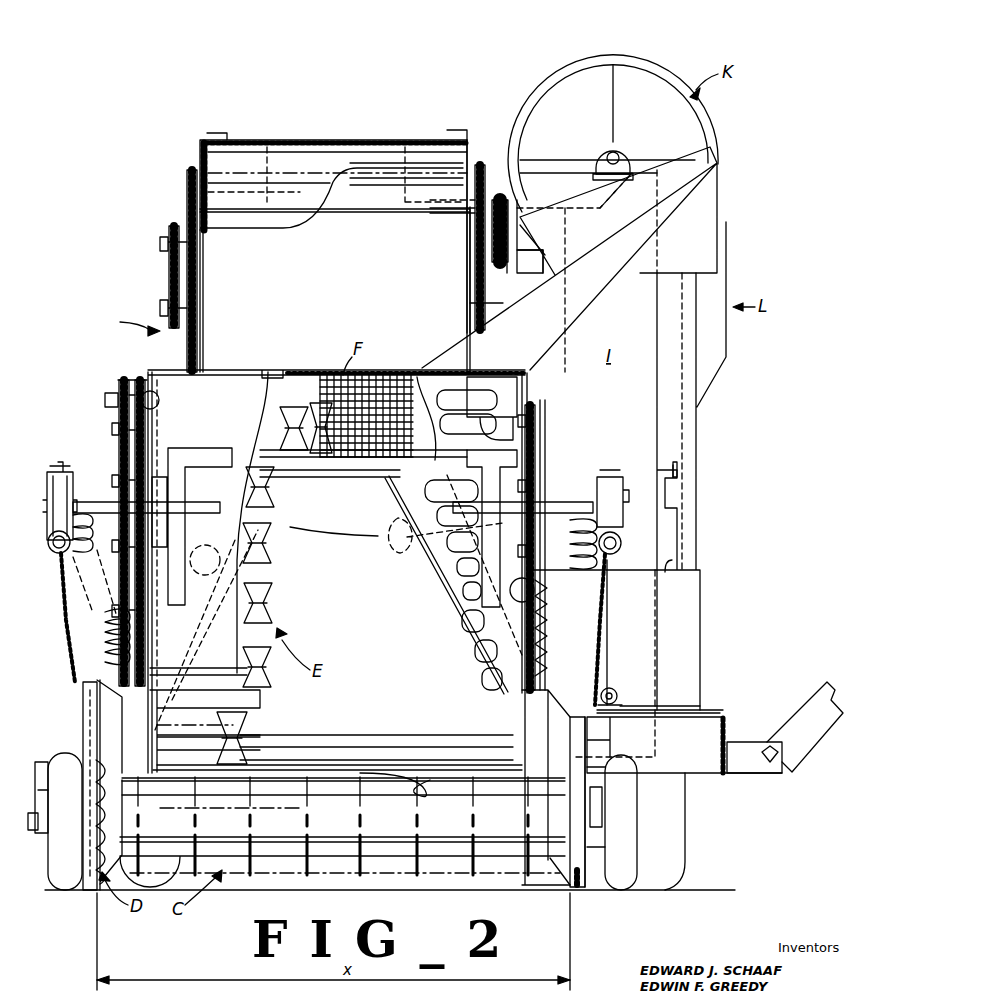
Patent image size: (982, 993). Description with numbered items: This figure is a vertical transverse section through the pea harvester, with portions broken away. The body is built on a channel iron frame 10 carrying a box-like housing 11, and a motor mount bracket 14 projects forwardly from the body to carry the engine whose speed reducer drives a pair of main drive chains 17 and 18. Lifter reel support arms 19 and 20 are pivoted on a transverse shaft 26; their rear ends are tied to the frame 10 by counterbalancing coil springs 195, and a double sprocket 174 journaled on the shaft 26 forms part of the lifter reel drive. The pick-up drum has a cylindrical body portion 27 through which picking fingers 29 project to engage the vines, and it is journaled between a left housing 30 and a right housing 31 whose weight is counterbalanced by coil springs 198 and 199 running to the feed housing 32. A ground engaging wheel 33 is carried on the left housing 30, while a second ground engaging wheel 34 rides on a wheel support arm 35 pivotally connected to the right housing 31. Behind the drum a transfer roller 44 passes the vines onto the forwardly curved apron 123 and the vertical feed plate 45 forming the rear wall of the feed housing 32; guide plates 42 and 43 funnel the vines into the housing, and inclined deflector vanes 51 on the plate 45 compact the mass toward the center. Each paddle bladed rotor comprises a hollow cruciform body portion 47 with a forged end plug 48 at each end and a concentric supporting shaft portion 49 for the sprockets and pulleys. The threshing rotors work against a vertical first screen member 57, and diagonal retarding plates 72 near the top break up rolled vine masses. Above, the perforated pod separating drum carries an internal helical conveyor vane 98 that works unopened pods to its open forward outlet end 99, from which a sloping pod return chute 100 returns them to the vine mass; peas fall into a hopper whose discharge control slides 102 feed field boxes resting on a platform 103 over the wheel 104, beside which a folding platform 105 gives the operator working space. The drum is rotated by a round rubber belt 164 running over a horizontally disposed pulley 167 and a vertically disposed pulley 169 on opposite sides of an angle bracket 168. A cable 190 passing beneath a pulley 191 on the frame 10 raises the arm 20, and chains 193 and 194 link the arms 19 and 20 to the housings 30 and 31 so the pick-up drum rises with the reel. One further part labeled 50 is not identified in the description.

The channel iron frame 10 is at (755, 770).
The box-like housing 11 is at (130, 322).
The motor mount bracket 14 is at (193, 458).
The main drive chain 17 is at (125, 380).
The main drive chain 18 is at (105, 398).
The lifter reel support arm 19 is at (50, 552).
The lifter reel support arm 20 is at (625, 485).
The shaft 26 is at (652, 505).
The cylindrical body portion 27 is at (342, 832).
The picking fingers 29 is at (455, 822).
The housing 30 is at (578, 890).
The housing 31 is at (83, 692).
The feed housing 32 is at (205, 699).
The ground engaging wheel 33 is at (625, 880).
The second ground engaging wheel 34 is at (62, 880).
The wheel support arm 35 is at (40, 790).
The guide plate 42 is at (122, 785).
The guide plate 43 is at (546, 787).
The transfer roller 44 is at (410, 790).
The feed plate 45 is at (337, 571).
The sheet metal body portion 47 is at (345, 420).
The forged metal end plug 48 is at (500, 415).
The supporting shaft portion 49 is at (160, 306).
The cone wall 50 is at (275, 425).
The deflector vanes 51 is at (297, 602).
The first screen member 57 is at (375, 388).
The retarding plates 72 is at (243, 168).
The helical conveyor vane 98 is at (640, 80).
The open forward outlet end 99 is at (712, 120).
The sloping pod return chute 100 is at (569, 358).
The discharge control slides 102 is at (678, 468).
The platform 103 is at (672, 562).
The wheel 104 is at (678, 842).
The folding platform 105 is at (812, 700).
The forwardly curved apron 123 is at (340, 757).
The round rubber belt 164 is at (495, 180).
The horizontally disposed pulley 167 is at (532, 257).
The angle bracket 168 is at (548, 270).
The vertically disposed pulley 169 is at (540, 233).
The double sprocket 174 is at (570, 503).
The cable 190 is at (595, 640).
The pulley 191 is at (620, 695).
The chain 193 is at (75, 640).
The chain 194 is at (600, 600).
The counterbalancing coil springs 195 is at (80, 555).
The coil spring 198 is at (548, 640).
The coil spring 199 is at (135, 634).